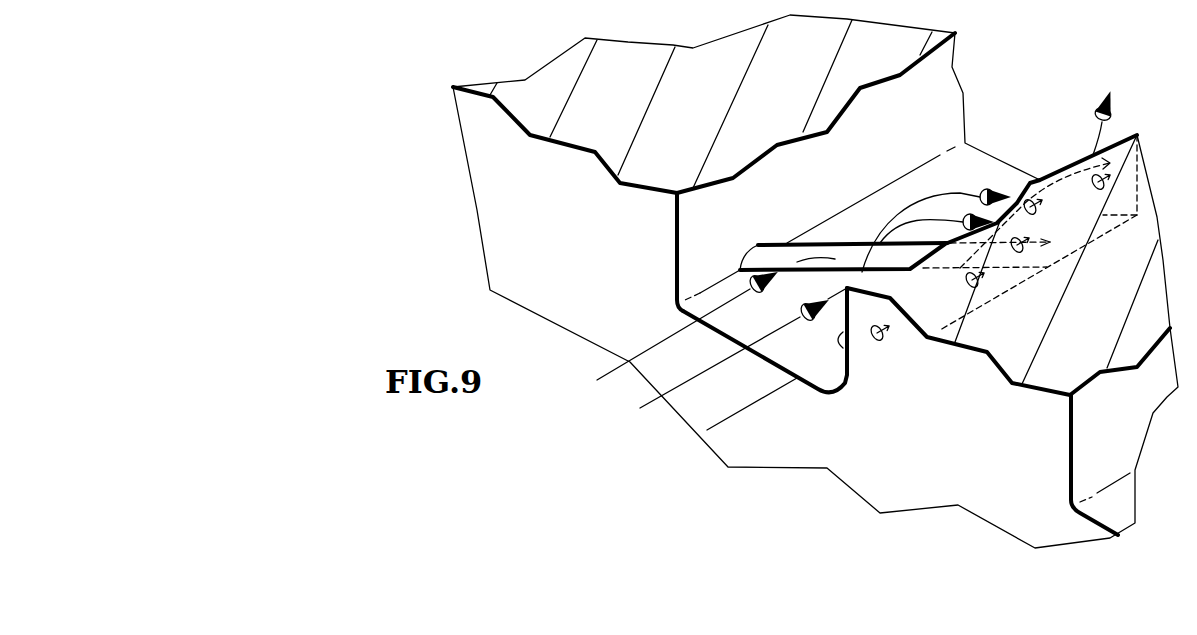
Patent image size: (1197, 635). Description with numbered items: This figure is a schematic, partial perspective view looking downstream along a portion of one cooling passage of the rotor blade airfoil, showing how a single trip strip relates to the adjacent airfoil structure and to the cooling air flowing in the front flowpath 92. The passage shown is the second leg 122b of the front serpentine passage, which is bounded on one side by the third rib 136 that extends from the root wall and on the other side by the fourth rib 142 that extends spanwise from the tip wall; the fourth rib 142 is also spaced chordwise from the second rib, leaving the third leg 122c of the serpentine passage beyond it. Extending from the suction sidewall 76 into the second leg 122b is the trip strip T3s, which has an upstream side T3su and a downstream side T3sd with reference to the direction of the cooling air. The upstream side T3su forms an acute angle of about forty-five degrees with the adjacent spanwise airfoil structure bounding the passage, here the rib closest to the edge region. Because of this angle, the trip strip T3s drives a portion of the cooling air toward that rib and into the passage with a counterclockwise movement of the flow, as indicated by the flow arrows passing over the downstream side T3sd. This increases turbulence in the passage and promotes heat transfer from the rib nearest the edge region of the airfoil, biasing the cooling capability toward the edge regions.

The suction sidewall 76 is at (773, 362).
The front flowpath for cooling air 92 is at (698, 373).
The second leg of the front serpentine passage 122b is at (1060, 108).
The third leg of the front serpentine passage 122c is at (1133, 441).
The third rib 136 is at (551, 214).
The fourth rib 142 is at (1015, 464).
The trip strip on the suction sidewall T3s is at (762, 243).
The downstream side of the trip strip T3sd is at (815, 245).
The upstream side of the trip strip T3su is at (800, 272).